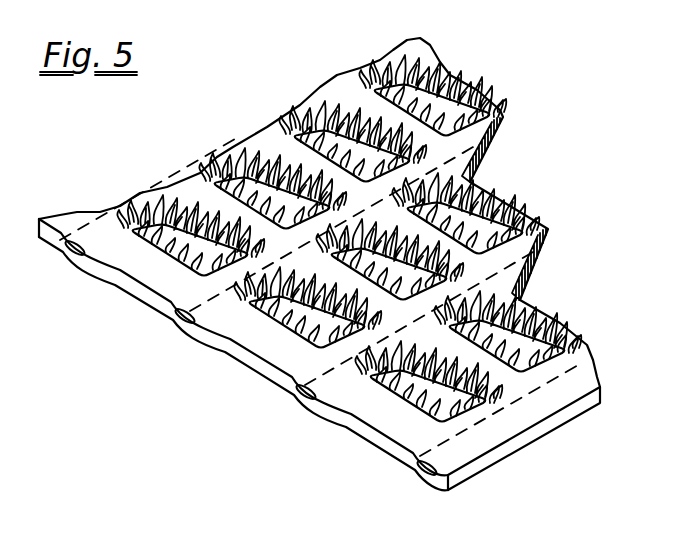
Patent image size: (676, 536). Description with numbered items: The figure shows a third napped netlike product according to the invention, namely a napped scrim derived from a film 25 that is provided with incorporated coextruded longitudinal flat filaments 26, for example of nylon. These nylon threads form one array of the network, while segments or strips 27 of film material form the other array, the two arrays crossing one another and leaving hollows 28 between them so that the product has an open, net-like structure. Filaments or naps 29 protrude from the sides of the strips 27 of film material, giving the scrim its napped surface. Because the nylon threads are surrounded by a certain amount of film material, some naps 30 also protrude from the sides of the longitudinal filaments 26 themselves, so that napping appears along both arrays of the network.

The film 25 is at (73, 222).
The coextruded longitudinal flat filaments 26 is at (183, 322).
The segments or strips of film material 27 is at (370, 106).
The hollows 28 is at (333, 142).
The filaments or naps 29 is at (266, 162).
The naps 30 is at (146, 224).